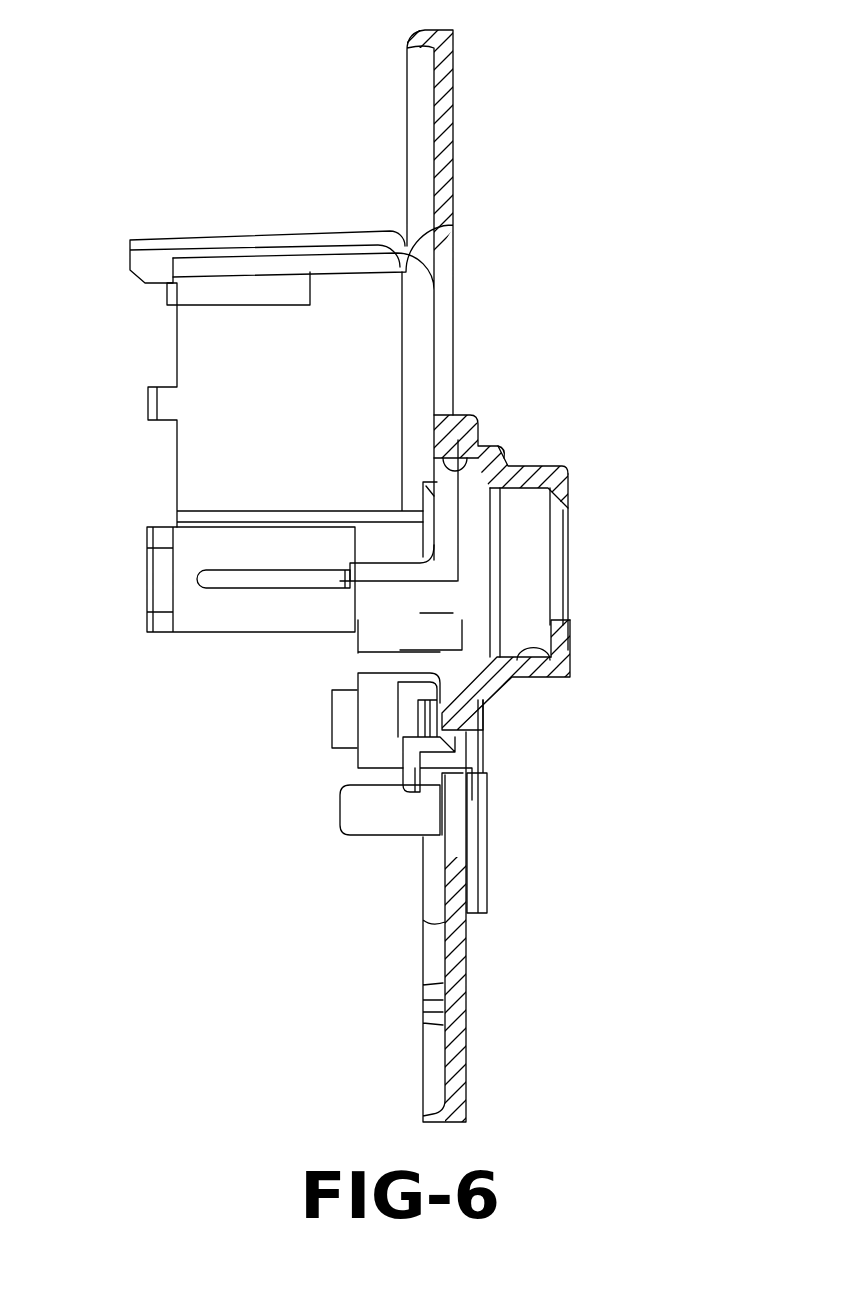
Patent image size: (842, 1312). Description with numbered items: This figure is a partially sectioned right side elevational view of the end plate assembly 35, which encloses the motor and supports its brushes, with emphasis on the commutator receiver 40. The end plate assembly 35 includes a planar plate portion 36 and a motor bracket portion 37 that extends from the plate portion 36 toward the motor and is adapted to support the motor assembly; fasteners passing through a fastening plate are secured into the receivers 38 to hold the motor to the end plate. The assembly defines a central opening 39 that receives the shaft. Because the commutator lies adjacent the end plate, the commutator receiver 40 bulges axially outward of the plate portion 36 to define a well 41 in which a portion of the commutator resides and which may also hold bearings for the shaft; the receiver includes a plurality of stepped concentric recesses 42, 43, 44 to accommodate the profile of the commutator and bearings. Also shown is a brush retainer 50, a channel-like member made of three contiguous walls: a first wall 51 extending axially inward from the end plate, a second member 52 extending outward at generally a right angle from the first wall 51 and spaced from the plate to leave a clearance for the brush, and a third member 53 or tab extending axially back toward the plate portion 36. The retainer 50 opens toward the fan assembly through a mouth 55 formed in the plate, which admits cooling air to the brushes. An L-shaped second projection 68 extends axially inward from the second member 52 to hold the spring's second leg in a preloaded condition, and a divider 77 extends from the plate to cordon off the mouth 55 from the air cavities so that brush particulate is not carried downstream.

The end plate assembly 35 is at (221, 186).
The plate portion 36 is at (443, 92).
The motor bracket portion 37 is at (228, 362).
The receiver 38 is at (148, 585).
The central opening 39 is at (568, 613).
The commutator receiver 40 is at (533, 450).
The well 41 is at (548, 497).
The stepped concentric recess 42 is at (568, 657).
The stepped concentric recess 43 is at (497, 672).
The stepped concentric recess 44 is at (497, 462).
The brush retainer 50 is at (330, 650).
The first wall 51 is at (378, 575).
The second member 52 is at (370, 650).
The third member 53 is at (385, 672).
The mouth 55 is at (440, 612).
The second projection 68 is at (348, 745).
The divider 77 is at (483, 838).